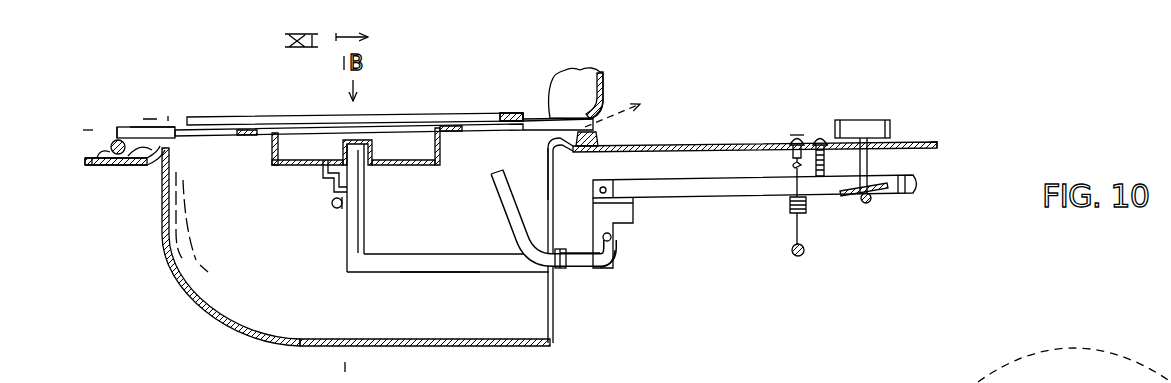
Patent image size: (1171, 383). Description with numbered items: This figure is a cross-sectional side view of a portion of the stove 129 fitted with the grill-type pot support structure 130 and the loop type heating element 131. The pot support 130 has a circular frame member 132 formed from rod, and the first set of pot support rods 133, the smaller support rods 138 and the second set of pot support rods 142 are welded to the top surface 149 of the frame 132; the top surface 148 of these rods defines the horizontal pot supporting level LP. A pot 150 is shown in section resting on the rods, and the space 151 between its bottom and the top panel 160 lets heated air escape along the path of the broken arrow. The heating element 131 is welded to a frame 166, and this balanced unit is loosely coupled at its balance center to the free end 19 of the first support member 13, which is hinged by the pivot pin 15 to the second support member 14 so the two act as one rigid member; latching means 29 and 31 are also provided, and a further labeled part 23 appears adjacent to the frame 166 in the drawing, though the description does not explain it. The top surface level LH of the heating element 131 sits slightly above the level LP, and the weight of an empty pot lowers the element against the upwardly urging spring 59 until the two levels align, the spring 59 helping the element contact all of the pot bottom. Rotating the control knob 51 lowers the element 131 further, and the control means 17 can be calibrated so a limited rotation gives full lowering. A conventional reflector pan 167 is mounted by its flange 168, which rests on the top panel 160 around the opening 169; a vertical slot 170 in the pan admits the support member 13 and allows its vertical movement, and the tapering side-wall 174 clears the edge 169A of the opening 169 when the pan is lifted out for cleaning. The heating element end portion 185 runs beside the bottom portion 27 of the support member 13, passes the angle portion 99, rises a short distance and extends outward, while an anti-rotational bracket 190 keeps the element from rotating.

The pot supporting top surface level LP is at (103, 127).
The horizontal top surface level of the heating element LH is at (169, 120).
The grill-type pot support structure 130 is at (130, 127).
The first set of smaller support rods 138 is at (142, 131).
The loop type heating element 131 is at (407, 113).
The second set of horizontally disposed pot support rods 142 is at (197, 138).
The first set of pot support rods 133 is at (243, 140).
The top surface of the pot support rods 148 is at (533, 116).
The pot 150 is at (606, 74).
The circular frame member 132 is at (598, 137).
The top surface of the frame 149 is at (603, 130).
The frame 166 is at (256, 142).
The channel bottom 23 is at (378, 162).
The latching means 29 is at (325, 178).
The latching means 31 is at (330, 198).
The free end of the first support member 19 is at (367, 210).
The first horizontally disposed heating element support member 13 is at (380, 273).
The bottom portion of the support member 27 is at (440, 273).
The flange 168 is at (104, 158).
The opening 169 is at (555, 148).
The edge of the opening 169A is at (158, 185).
The tapering side-wall 174 is at (178, 270).
The reflector pan 167 is at (233, 328).
The vertical slot 170 is at (540, 292).
The space 151 is at (540, 129).
The angle portion 99 is at (595, 252).
The heating element end portion 185 is at (584, 268).
The anti-rotational bracket 190 is at (565, 268).
The top panel 160 is at (757, 146).
The control means 17 is at (918, 134).
The stove 129 is at (822, 76).
The second horizontally disposed support member 14 is at (732, 199).
The pivot pin 15 is at (603, 180).
The upwardly urging spring 59 is at (791, 210).
The control knob 51 is at (864, 120).